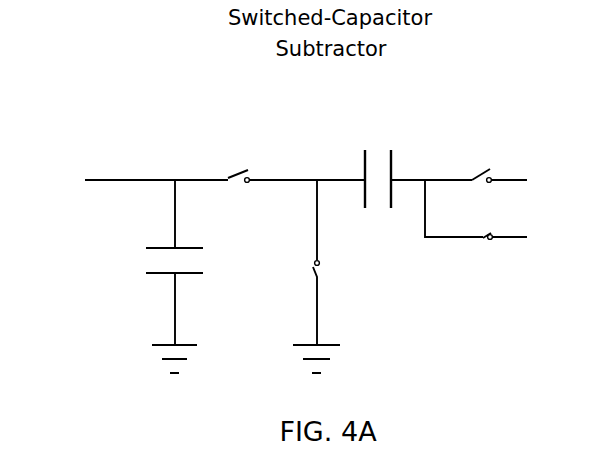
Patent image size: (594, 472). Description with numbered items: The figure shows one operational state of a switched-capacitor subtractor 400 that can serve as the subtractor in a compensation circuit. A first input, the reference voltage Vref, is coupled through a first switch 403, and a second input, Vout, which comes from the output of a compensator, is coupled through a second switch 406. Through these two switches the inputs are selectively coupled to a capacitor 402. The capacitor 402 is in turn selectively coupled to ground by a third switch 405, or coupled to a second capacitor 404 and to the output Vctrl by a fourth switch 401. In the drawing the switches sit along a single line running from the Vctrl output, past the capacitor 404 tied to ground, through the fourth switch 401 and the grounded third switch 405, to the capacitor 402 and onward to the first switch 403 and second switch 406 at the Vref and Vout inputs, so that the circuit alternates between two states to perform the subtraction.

The switched-capacitor subtractor 400 is at (144, 58).
The fourth switch 401 is at (245, 171).
The capacitor 402 is at (377, 158).
The first switch 403 is at (487, 163).
The capacitor 404 is at (138, 259).
The third switch 405 is at (305, 270).
The second switch 406 is at (483, 248).